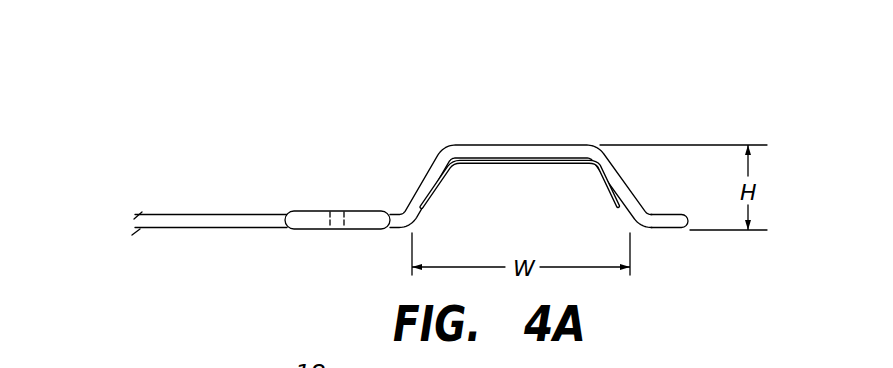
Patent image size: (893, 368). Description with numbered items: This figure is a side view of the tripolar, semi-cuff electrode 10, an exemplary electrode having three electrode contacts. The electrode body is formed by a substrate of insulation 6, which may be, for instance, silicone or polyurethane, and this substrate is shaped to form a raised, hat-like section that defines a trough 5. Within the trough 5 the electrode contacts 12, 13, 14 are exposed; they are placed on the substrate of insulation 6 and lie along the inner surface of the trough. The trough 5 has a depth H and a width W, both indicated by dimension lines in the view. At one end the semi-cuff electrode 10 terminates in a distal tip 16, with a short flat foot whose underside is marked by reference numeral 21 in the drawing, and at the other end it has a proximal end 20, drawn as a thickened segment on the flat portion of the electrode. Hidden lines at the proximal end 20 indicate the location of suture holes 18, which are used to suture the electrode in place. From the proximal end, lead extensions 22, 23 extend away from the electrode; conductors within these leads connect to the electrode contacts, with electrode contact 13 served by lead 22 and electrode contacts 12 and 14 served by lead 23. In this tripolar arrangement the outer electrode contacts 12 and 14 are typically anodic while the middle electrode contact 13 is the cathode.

The semi-cuff electrode 10 is at (342, 107).
The trough 5 is at (572, 181).
The substrate of insulation 6 is at (522, 145).
The electrode contact 12 is at (520, 201).
The electrode contact 13 is at (520, 201).
The electrode contact 14 is at (481, 163).
The distal tip 16 is at (663, 212).
The suture holes 18 is at (337, 231).
The proximal end 20 is at (308, 199).
The bottom surface of foot 21 is at (674, 245).
The lead extension 22 is at (203, 190).
The lead extension 23 is at (183, 213).